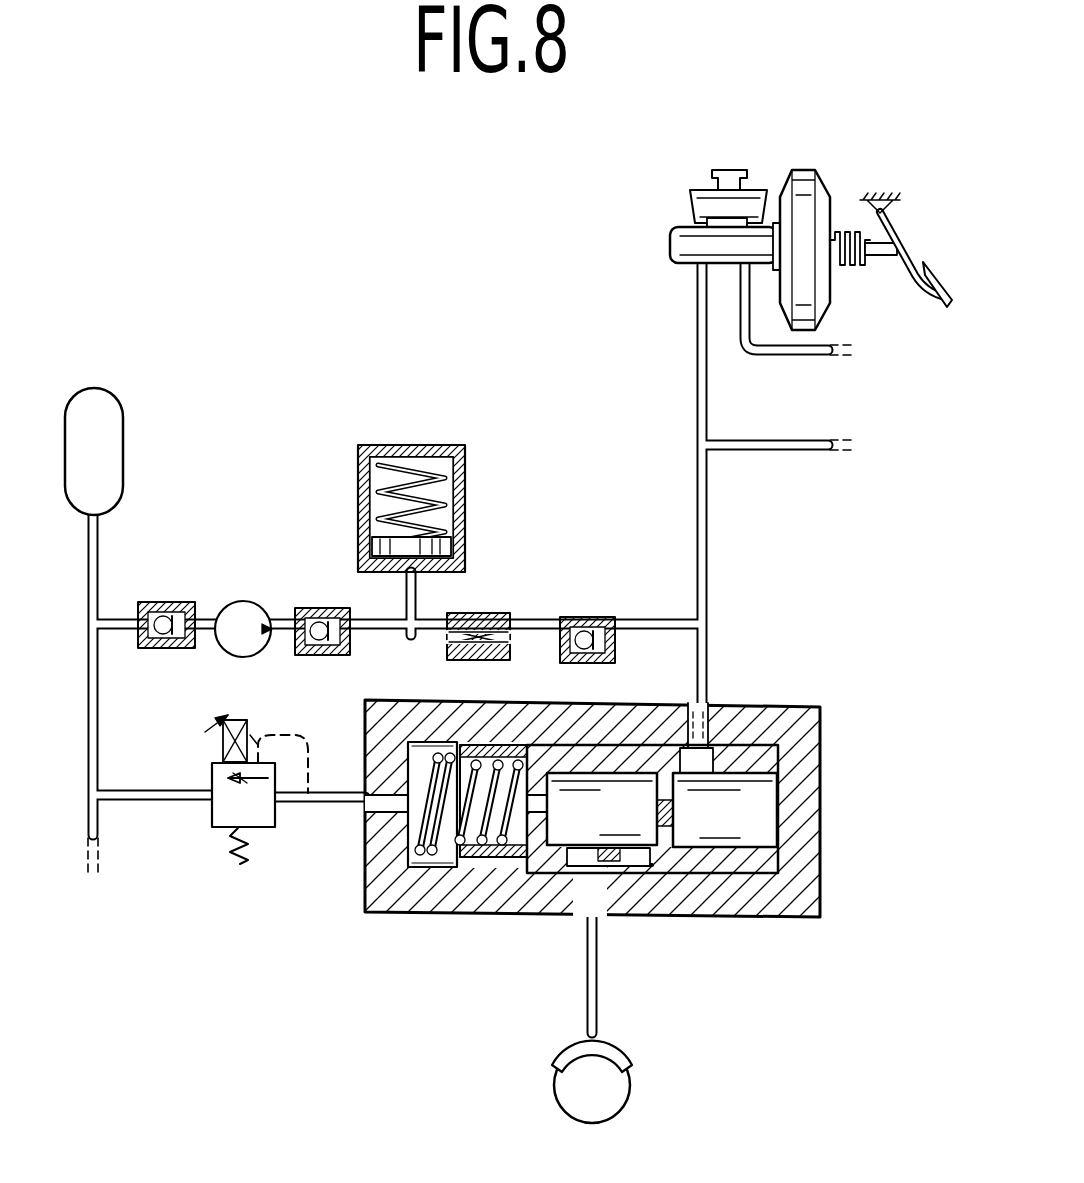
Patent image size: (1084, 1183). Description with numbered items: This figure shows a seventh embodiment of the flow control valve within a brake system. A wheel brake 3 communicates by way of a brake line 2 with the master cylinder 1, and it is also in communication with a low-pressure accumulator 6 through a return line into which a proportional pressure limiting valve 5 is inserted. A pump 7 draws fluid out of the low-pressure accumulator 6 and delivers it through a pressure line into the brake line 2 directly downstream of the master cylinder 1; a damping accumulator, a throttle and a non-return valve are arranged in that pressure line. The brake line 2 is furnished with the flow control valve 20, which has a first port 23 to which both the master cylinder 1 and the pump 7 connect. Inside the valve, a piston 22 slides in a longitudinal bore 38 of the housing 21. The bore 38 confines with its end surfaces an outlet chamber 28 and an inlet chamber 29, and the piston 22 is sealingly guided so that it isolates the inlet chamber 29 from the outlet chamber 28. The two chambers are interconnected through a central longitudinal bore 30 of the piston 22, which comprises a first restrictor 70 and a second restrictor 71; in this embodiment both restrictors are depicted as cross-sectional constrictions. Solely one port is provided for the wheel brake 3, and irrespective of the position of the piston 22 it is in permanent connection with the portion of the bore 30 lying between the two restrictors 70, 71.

The master cylinder 1 is at (652, 232).
The brake line 2 is at (697, 389).
The wheel brake 3 is at (620, 1073).
The proportional pressure limiting valve 5 is at (263, 832).
The low-pressure accumulator 6 is at (110, 425).
The pump 7 is at (238, 621).
The flow control valve 20 is at (610, 820).
The housing 21 is at (813, 918).
The piston 22 is at (767, 727).
The first port 23 is at (712, 706).
The outlet chamber 28 is at (430, 857).
The inlet chamber 29 is at (787, 823).
The central longitudinal bore 30 is at (747, 833).
The longitudinal bore 38 is at (407, 867).
The first restrictor 70 is at (553, 817).
The second restrictor 71 is at (680, 820).